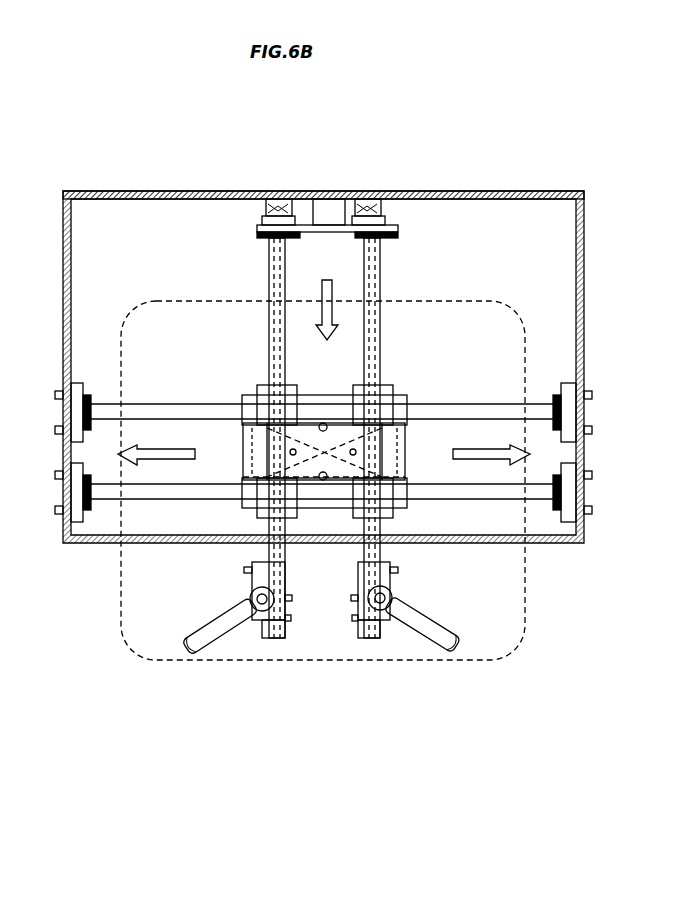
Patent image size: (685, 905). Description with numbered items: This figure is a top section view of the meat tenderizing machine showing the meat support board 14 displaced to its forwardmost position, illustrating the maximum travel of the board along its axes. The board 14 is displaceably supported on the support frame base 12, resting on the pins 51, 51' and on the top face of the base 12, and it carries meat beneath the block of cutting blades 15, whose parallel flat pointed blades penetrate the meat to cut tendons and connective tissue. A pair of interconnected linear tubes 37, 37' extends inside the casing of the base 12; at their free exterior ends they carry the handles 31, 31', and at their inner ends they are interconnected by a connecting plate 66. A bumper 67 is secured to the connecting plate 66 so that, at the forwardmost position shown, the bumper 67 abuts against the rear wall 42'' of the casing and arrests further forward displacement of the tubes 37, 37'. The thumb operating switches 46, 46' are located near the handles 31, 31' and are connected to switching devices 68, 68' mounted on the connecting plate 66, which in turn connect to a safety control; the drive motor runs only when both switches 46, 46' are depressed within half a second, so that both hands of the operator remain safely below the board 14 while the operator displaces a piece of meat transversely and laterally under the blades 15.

The support frame base 12 is at (351, 332).
The meat support board 14 is at (523, 597).
The block of cutting blades 15 is at (328, 443).
The handle 31 is at (220, 658).
The handle 31' is at (422, 658).
The linear tube 37 is at (237, 438).
The linear tube 37' is at (418, 438).
The rear wall 42'' is at (323, 160).
The thumb operating switch 46 is at (273, 641).
The thumb operating switch 46' is at (370, 641).
The pin 51 is at (226, 591).
The pin 51' is at (419, 590).
The connecting plate 66 is at (398, 231).
The bumper 67 is at (327, 202).
The switching device 68 is at (241, 173).
The switching device 68' is at (405, 173).